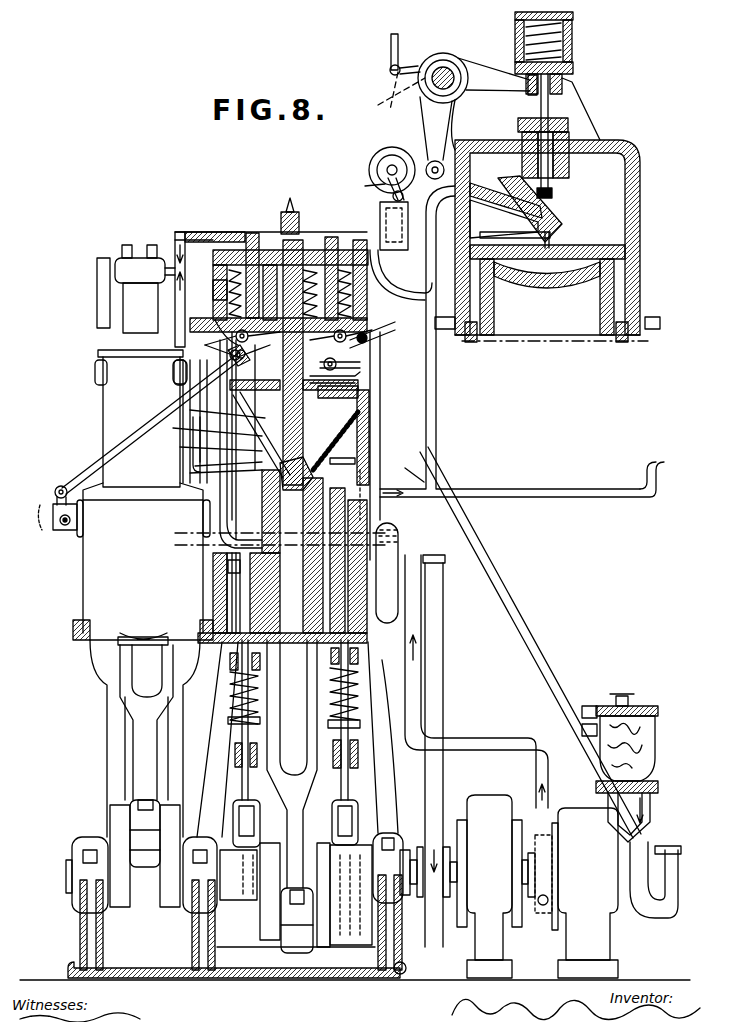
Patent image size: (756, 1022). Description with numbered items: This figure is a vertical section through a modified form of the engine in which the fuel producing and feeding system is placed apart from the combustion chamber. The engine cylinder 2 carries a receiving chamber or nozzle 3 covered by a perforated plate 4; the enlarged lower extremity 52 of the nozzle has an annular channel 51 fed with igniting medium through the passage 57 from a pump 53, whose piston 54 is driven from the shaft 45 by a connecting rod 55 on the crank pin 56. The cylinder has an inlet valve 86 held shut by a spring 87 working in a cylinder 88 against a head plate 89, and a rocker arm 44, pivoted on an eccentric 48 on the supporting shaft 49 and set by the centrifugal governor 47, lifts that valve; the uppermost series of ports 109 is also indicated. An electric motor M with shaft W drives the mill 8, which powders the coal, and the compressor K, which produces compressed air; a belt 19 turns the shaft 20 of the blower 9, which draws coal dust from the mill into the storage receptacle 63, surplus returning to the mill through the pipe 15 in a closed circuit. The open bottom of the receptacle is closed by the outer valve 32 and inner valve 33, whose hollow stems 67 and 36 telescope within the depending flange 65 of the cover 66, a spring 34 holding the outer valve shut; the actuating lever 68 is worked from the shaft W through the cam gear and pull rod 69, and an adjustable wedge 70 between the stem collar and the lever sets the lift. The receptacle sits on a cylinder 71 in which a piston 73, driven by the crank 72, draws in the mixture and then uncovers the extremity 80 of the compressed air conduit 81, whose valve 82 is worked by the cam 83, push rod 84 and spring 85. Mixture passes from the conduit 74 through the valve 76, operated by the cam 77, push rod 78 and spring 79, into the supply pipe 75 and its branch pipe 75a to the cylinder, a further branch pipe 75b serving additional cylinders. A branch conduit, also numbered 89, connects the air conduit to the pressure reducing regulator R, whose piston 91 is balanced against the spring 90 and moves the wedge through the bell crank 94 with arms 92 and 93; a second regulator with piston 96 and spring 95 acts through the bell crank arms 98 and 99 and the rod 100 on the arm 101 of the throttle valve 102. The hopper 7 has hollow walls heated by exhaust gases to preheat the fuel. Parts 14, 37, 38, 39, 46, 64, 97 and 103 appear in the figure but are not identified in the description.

The cylinder 2 is at (622, 284).
The receiving chamber or nozzle 3 is at (535, 212).
The plate 4 is at (553, 288).
The hopper 7 is at (655, 720).
The mill 8 is at (573, 893).
The blower 9 is at (398, 550).
The branch pipe 14 is at (413, 478).
The pipe or conduit 15 is at (510, 605).
The belt 19 is at (443, 650).
The shaft of the blower 20 is at (443, 578).
The outer valve 32 is at (190, 447).
The inner valve 33 is at (190, 473).
The spring 34 is at (343, 423).
The hollow stem of inner valve 36 is at (355, 380).
The rod 37 is at (180, 458).
The cam block 38 is at (318, 470).
The valve stem 39 is at (332, 237).
The rocker arm 44 is at (528, 96).
The shaft 45 is at (372, 160).
The valve chest 46 is at (458, 180).
The centrifugal governor 47 is at (390, 45).
The eccentric 48 is at (420, 82).
The supporting shaft 49 is at (447, 60).
The annular channel 51 is at (560, 228).
The enlarged lower extremity 52 is at (562, 214).
The pump 53 is at (382, 232).
The piston 54 is at (372, 196).
The connecting rod 55 is at (365, 190).
The crank pin 56 is at (425, 170).
The passage or conduit 57 is at (500, 230).
The storage receptacle 63 is at (345, 432).
The link 64 is at (350, 465).
The depending flange 65 is at (240, 412).
The cover 66 is at (178, 372).
The hollow stem of outer valve 67 is at (190, 428).
The actuating lever 68 is at (360, 358).
The cam gear and pull rod 69 is at (376, 770).
The adjustable wedge 70 is at (246, 340).
The cylinder 71 is at (222, 540).
The crank 72 is at (282, 925).
The reciprocal piston 73 is at (228, 728).
The conduit 74 is at (395, 494).
The supply pipe 75 is at (398, 500).
The branch pipe 75a is at (437, 408).
The additional branch pipe 75b is at (645, 468).
The valve 76 is at (355, 484).
The cam 77 is at (350, 945).
The push rod 78 is at (360, 742).
The spring 79 is at (360, 690).
The extremity of compressed air conduit 80 is at (213, 562).
The conduit for compressed air 81 is at (200, 515).
The valve 82 is at (228, 587).
The cam 83 is at (250, 915).
The push rod 84 is at (244, 795).
The spring 85 is at (230, 692).
The inlet valve 86 is at (560, 190).
The spring 87 is at (574, 42).
The cylinder 88 is at (518, 40).
The head plate 89 is at (222, 236).
The spring 90 is at (375, 285).
The piston 91 is at (382, 244).
The arm of bell crank 92 is at (340, 336).
The arm of bell crank 93 is at (350, 345).
The bell crank 94 is at (360, 320).
The spring 95 is at (258, 240).
The piston 96 is at (216, 268).
The reservoir 97 is at (165, 325).
The arm of bell crank 98 is at (228, 320).
The arm of bell crank 99 is at (240, 368).
The rod 100 is at (120, 432).
The arm 101 is at (100, 468).
The throttle valve 102 is at (60, 538).
The housing 103 is at (560, 170).
The ports 109 is at (470, 345).
The compressor K is at (143, 593).
The electric motor M is at (492, 886).
The shaft of electric motor W is at (455, 830).
The pressure reducing regulator R is at (225, 300).